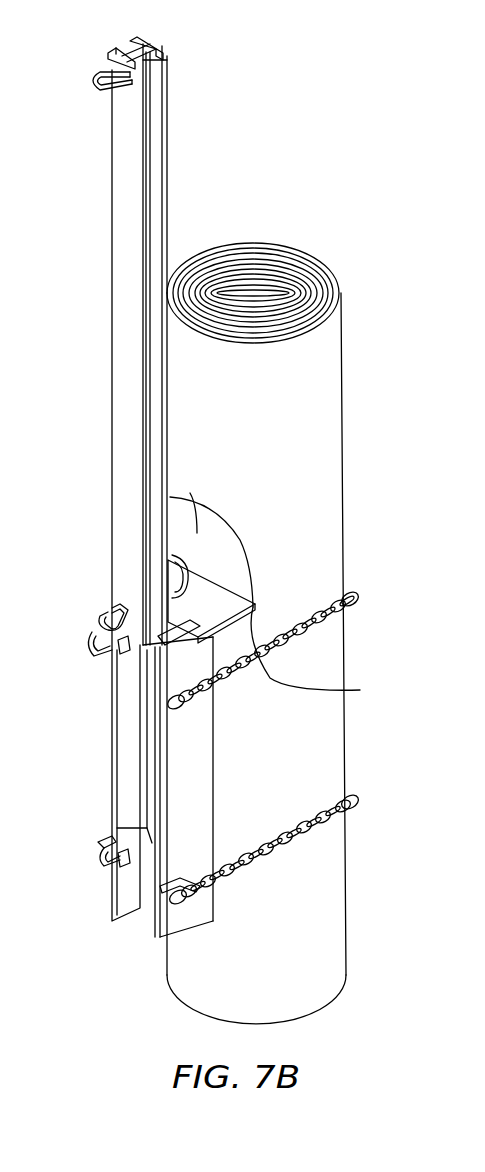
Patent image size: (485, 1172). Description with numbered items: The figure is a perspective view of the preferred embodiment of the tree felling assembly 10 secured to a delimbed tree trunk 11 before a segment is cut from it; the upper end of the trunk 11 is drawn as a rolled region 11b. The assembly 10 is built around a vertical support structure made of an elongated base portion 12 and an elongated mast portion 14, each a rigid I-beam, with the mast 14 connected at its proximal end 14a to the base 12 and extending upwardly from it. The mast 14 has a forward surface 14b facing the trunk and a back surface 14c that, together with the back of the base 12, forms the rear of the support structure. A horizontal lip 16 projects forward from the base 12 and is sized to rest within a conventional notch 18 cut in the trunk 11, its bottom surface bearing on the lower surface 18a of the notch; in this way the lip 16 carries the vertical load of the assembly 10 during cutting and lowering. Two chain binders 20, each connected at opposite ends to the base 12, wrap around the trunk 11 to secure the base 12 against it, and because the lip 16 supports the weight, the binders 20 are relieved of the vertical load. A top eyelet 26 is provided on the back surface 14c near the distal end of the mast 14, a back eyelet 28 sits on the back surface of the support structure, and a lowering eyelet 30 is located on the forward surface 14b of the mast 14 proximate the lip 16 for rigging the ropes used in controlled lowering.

The tree felling assembly 10 is at (283, 130).
The tree trunk 11 is at (343, 953).
The rolled end of sheet material 11b is at (282, 267).
The base portion 12 is at (110, 910).
The mast portion 14 is at (127, 487).
The proximal end of mast 14a is at (135, 825).
The forward surface of mast 14b is at (165, 160).
The back surface of mast 14c is at (121, 230).
The horizontal lip 16 is at (213, 603).
The notch 18 is at (185, 485).
The lower surface of notch 18a is at (333, 655).
The chain binder 20 is at (290, 648).
The top eyelet 26 is at (100, 72).
The back eyelet 28 is at (115, 610).
The lowering eyelet 30 is at (182, 548).